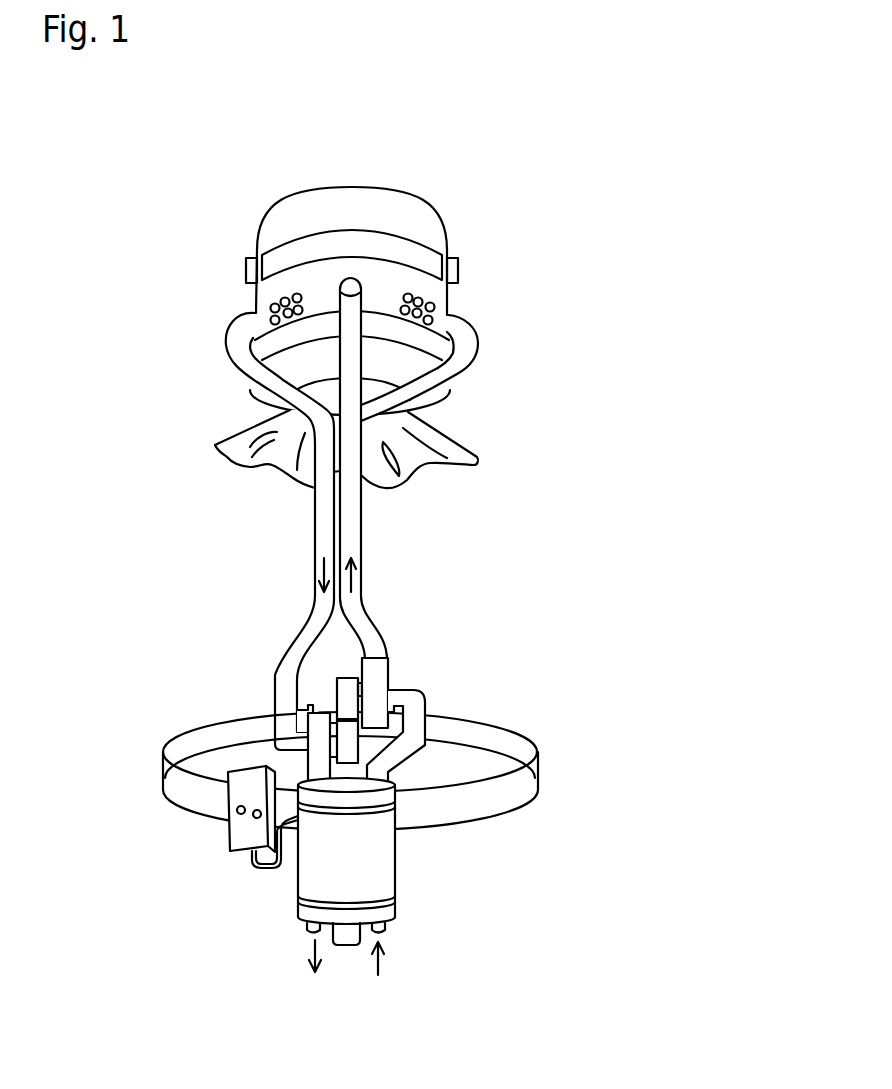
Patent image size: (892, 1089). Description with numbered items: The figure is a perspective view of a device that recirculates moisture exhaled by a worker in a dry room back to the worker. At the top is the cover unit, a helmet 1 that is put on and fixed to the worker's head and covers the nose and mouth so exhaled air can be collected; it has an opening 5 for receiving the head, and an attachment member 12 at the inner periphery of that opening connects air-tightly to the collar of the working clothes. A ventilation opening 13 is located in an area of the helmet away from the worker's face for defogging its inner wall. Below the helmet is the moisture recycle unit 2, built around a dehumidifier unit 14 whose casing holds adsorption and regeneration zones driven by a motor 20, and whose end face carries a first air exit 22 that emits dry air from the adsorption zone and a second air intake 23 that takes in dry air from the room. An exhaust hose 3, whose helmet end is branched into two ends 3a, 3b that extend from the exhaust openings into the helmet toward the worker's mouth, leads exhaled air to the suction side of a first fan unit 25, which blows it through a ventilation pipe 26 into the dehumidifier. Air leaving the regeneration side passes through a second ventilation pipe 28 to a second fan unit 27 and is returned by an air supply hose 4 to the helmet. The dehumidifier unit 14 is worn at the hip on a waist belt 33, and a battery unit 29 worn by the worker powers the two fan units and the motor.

The helmet 1 is at (336, 237).
The moisture recycle unit 2 is at (310, 831).
The exhaust hose 3 is at (325, 553).
The branched end of exhaust hose 3a is at (236, 351).
The branched end of exhaust hose 3b is at (460, 368).
The air supply hose 4 is at (352, 527).
The opening 5 is at (402, 247).
The attachment member 12 is at (422, 443).
The ventilation opening 13 is at (271, 299).
The dehumidifier unit 14 is at (383, 868).
The motor 20 is at (348, 946).
The first air exit 22 is at (308, 927).
The second air intake 23 is at (385, 927).
The first fan unit 25 is at (322, 718).
The ventilation pipe 26 is at (317, 765).
The second fan unit 27 is at (383, 676).
The second ventilation pipe 28 is at (417, 721).
The battery unit 29 is at (229, 816).
The waist belt 33 is at (205, 745).